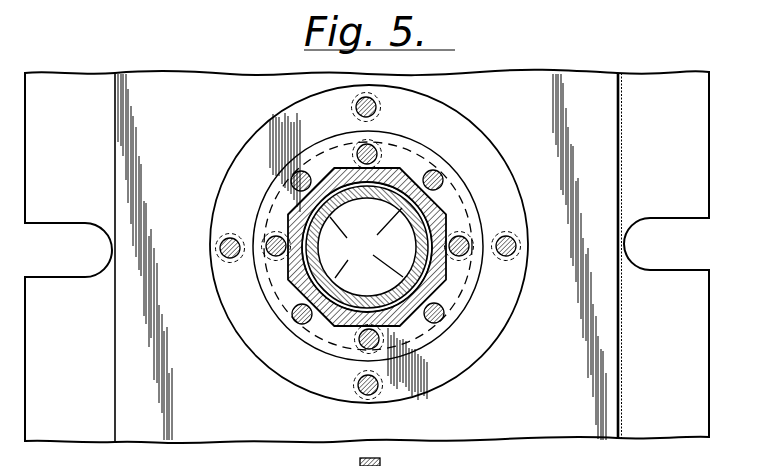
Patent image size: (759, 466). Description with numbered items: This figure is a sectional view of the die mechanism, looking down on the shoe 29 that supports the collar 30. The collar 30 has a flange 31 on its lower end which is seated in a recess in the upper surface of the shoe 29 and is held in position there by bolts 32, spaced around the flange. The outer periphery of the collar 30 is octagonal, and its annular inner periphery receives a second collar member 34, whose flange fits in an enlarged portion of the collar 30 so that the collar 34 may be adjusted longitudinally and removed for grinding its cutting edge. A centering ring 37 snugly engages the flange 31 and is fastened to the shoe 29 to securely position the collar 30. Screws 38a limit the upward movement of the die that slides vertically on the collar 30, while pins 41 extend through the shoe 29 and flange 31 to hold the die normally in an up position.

The shoe 29 is at (581, 95).
The collar 30 is at (298, 208).
The flange 31 is at (450, 292).
The bolts 32 is at (378, 152).
The second collar member 34 is at (338, 192).
The centering ring 37 is at (498, 163).
The screws 38a is at (378, 105).
The pins 41 is at (367, 247).